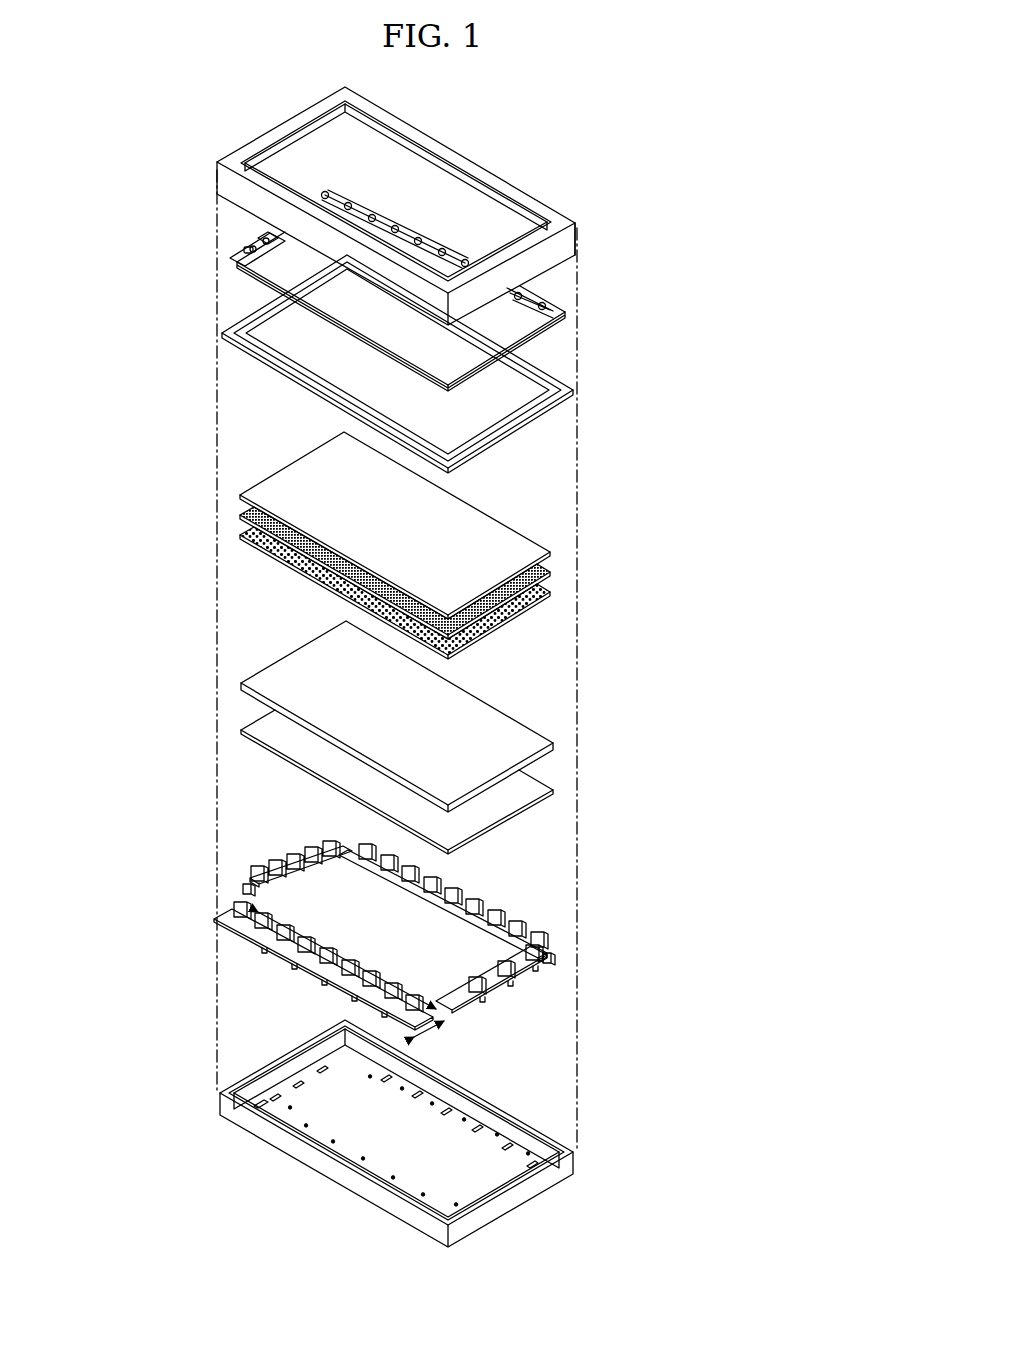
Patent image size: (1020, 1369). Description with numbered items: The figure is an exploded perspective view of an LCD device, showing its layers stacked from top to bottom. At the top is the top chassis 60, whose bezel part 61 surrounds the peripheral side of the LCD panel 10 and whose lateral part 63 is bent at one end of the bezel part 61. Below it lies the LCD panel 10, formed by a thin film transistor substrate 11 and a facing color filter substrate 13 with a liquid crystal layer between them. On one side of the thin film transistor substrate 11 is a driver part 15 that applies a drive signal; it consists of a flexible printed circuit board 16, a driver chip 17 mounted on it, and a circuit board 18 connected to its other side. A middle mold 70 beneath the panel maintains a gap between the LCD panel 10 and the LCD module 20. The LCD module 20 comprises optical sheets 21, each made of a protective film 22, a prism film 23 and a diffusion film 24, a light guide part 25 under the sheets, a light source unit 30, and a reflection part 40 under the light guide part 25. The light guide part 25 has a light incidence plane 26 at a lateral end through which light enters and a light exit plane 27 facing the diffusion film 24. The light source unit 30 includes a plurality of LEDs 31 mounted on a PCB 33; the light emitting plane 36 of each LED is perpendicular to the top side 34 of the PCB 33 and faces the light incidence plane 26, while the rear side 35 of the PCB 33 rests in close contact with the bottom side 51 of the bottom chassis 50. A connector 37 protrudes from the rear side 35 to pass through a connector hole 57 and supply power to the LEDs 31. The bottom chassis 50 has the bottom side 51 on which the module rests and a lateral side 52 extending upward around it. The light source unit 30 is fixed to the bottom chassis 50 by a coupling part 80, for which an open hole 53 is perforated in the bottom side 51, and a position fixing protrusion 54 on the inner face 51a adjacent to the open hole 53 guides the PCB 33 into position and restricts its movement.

The LCD panel 10 is at (403, 290).
The thin film transistor substrate 11 is at (537, 338).
The color filter substrate 13 is at (540, 324).
The driver part 15 is at (190, 266).
The flexible printed circuit board 16 is at (257, 273).
The driver chip 17 is at (247, 250).
The circuit board 18 is at (267, 226).
The LCD module 20 is at (478, 742).
The optical sheets 21 is at (477, 545).
The protective film 22 is at (551, 554).
The prism film 23 is at (551, 574).
The diffusion film 24 is at (551, 595).
The light guide part 25 is at (478, 716).
The light incidence plane 26 is at (507, 779).
The light exit plane 27 is at (505, 732).
The light source unit 30 is at (446, 931).
The LEDs 31 is at (280, 868).
The PCB 33 is at (288, 885).
The top side of the PCB 34 is at (315, 862).
The rear side of the PCB 35 is at (473, 997).
The light emitting plane 36 is at (285, 862).
The connector 37 is at (548, 962).
The reflection part 40 is at (558, 800).
The bottom chassis 50 is at (420, 1124).
The bottom side of the bottom chassis 51 is at (462, 1150).
The inner face of the bottom side 51a is at (516, 1162).
The lateral side of the bottom chassis 52 is at (510, 1200).
The open hole 53 is at (273, 1093).
The position fixing protrusion 54 is at (313, 1090).
The connector hole 57 is at (255, 1100).
The top chassis 60 is at (442, 206).
The bezel part 61 is at (463, 158).
The lateral part 63 is at (565, 257).
The middle mold 70 is at (580, 392).
The coupling part 80 is at (512, 1003).